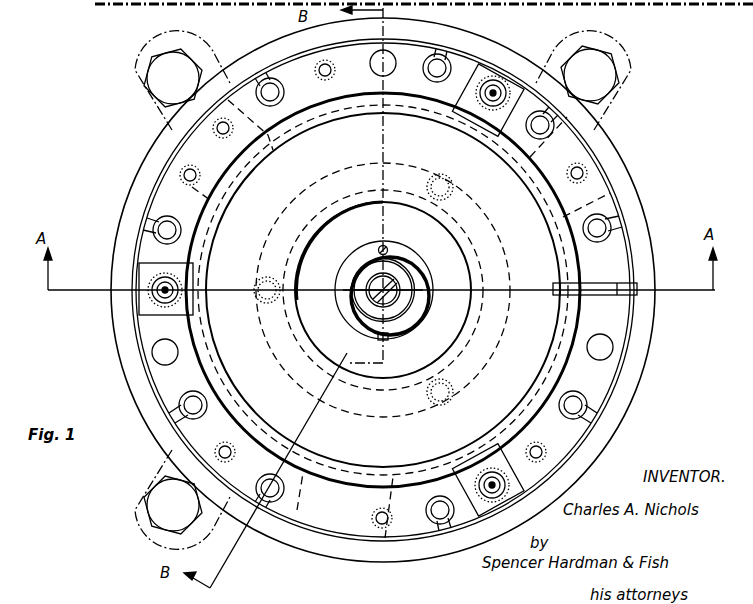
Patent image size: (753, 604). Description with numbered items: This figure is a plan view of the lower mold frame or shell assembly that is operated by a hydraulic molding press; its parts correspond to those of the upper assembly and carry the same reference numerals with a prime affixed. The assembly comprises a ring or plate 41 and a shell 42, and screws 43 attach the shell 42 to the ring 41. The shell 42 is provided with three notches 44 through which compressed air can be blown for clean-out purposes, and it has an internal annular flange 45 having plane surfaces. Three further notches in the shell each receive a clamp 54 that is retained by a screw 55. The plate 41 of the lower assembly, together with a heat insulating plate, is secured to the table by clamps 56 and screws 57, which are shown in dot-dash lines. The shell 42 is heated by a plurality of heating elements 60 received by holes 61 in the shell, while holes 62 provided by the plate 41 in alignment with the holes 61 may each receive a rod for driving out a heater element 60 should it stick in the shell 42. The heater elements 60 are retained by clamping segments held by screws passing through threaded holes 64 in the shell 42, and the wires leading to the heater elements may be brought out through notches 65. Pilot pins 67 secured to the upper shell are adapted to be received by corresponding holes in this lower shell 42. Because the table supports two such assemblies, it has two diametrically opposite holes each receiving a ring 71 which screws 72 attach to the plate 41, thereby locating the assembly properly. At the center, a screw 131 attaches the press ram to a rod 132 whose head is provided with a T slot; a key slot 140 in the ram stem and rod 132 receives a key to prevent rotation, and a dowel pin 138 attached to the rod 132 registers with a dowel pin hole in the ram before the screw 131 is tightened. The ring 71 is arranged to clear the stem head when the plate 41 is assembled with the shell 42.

The ring 41 is at (130, 196).
The shell 42 is at (183, 167).
The screws 43 is at (473, 128).
The notches 44 is at (266, 146).
The internal annular flange 45 is at (236, 190).
The clamp 54 is at (487, 70).
The screw 55 is at (160, 288).
The clamps 56 is at (624, 77).
The screws 57 is at (602, 68).
The heating elements 60 is at (271, 478).
The holes 61 is at (600, 205).
The holes 62 is at (620, 225).
The threaded holes 64 is at (225, 140).
The notches 65 is at (270, 500).
The pilot pins 67 is at (376, 60).
The ring 71 is at (267, 248).
The screws 72 is at (262, 288).
The screw 131 is at (398, 287).
The rod 132 is at (420, 318).
The dowel pin 138 is at (387, 249).
The key slot 140 is at (388, 340).